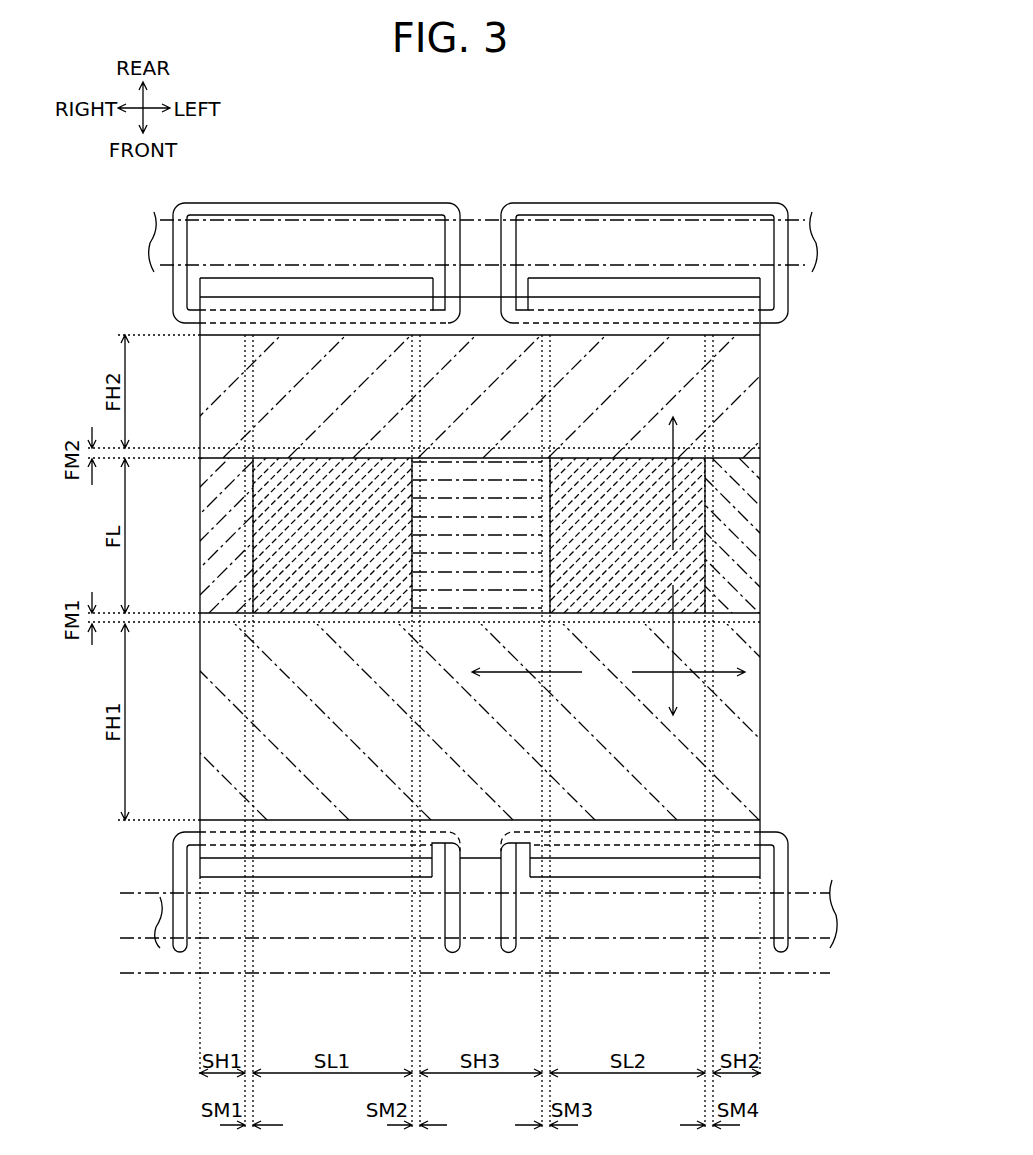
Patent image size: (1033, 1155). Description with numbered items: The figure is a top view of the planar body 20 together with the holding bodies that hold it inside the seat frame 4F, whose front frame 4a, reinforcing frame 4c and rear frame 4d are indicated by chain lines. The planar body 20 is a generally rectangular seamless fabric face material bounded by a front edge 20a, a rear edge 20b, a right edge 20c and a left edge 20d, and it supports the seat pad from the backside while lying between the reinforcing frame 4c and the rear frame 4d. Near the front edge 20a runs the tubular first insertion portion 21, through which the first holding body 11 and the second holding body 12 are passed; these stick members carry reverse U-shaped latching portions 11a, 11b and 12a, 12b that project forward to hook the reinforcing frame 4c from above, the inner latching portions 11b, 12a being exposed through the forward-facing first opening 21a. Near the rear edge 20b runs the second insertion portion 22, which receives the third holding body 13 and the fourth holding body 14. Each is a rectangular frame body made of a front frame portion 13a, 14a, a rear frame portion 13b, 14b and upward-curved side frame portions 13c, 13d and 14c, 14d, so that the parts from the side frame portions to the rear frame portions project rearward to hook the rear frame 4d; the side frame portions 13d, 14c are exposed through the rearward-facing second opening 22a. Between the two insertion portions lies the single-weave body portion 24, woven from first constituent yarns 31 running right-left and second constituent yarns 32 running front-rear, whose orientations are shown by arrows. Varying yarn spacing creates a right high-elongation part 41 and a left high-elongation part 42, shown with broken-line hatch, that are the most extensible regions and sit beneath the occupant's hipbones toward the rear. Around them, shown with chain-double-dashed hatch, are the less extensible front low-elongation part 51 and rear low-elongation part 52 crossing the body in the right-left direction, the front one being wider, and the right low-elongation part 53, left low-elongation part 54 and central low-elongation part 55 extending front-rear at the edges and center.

The seat frame 4F is at (478, 593).
The front frame 4a is at (618, 967).
The reinforcing frame 4c is at (295, 920).
The rear frame 4d is at (568, 240).
The first holding body 11 is at (283, 926).
The right latching portion 11a is at (177, 898).
The left latching portion 11b is at (452, 917).
The second holding body 12 is at (657, 902).
The right latching portion 12a is at (510, 917).
The left latching portion 12b is at (783, 900).
The third holding body 13 is at (282, 267).
The front frame portion 13a is at (302, 314).
The rear frame portion 13b is at (267, 208).
The right side frame portion 13c is at (183, 257).
The left side frame portion 13d is at (448, 257).
The fourth holding body 14 is at (661, 267).
The front frame portion 14a is at (664, 314).
The rear frame portion 14b is at (708, 207).
The right side frame portion 14c is at (515, 253).
The left side frame portion 14d is at (773, 253).
The planar body 20 is at (485, 548).
The front edge 20a is at (330, 878).
The rear edge 20b is at (340, 278).
The right edge 20c is at (200, 560).
The left edge 20d is at (762, 558).
The first insertion portion 21 is at (645, 820).
The first opening 21a is at (478, 842).
The second insertion portion 22 is at (366, 337).
The second opening 22a is at (480, 314).
The body portion 24 is at (497, 722).
The first constituent yarns 31 is at (608, 672).
The second constituent yarns 32 is at (672, 566).
The right high-elongation part 41 is at (319, 541).
The left high-elongation part 42 is at (612, 541).
The front low-elongation part 51 is at (465, 726).
The rear low-elongation part 52 is at (466, 431).
The right low-elongation part 53 is at (210, 541).
The left low-elongation part 54 is at (725, 541).
The central low-elongation part 55 is at (467, 541).